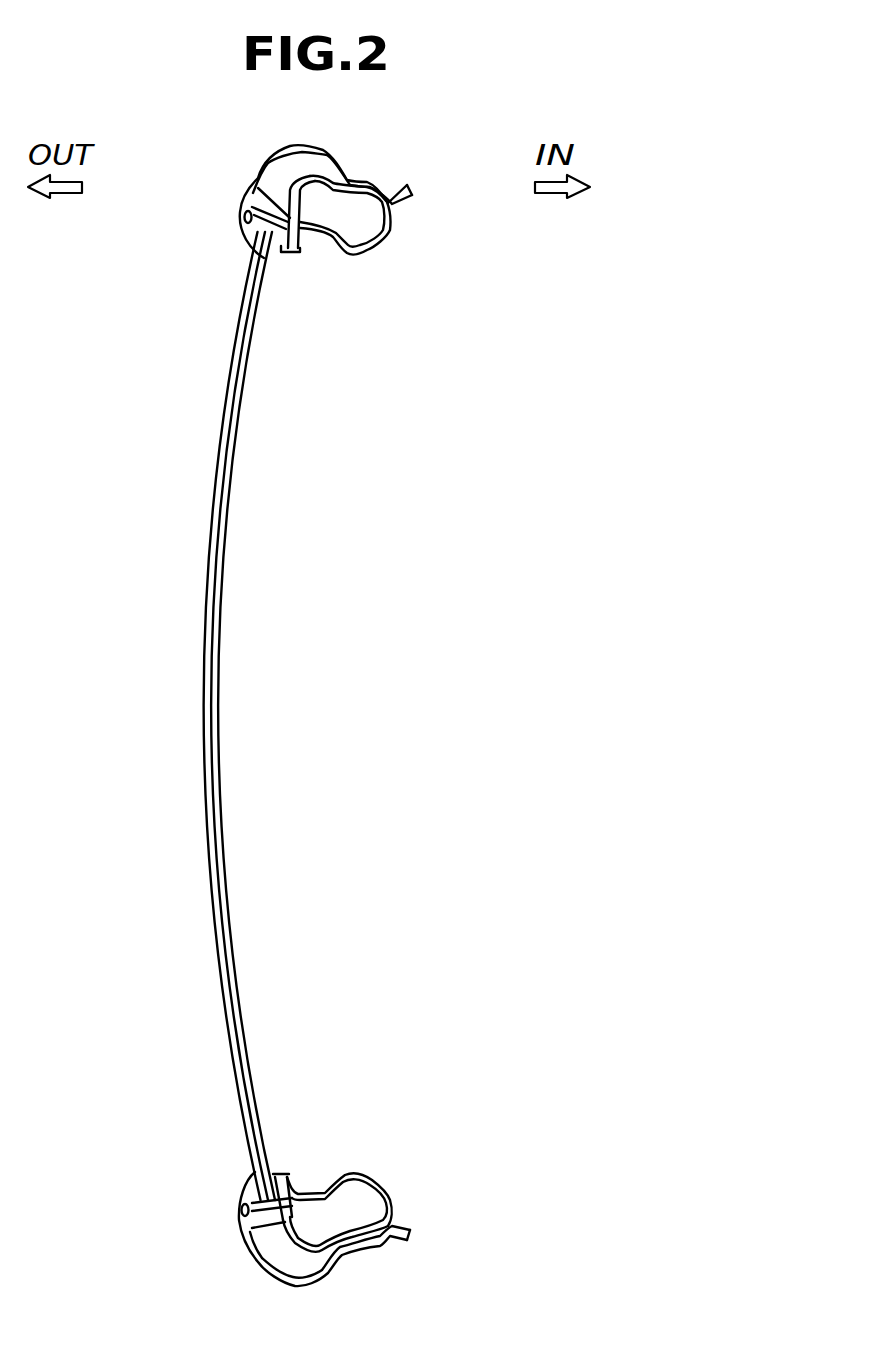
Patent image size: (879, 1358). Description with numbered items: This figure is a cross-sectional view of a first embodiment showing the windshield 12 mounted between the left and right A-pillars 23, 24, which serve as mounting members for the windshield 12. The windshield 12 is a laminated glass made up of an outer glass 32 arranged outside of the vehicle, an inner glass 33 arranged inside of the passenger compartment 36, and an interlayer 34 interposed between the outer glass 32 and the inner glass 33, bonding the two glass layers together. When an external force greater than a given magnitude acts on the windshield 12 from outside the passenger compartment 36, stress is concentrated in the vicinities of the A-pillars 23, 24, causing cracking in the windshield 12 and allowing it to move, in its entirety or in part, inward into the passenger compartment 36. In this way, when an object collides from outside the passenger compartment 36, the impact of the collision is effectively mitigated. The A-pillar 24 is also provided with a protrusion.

The windshield 12 is at (194, 716).
The left A-pillar 23 is at (374, 1176).
The right A-pillar 24 is at (389, 264).
The outer glass 32 is at (208, 862).
The inner glass 33 is at (222, 862).
The interlayer 34 is at (242, 1012).
The passenger compartment 36 is at (483, 636).